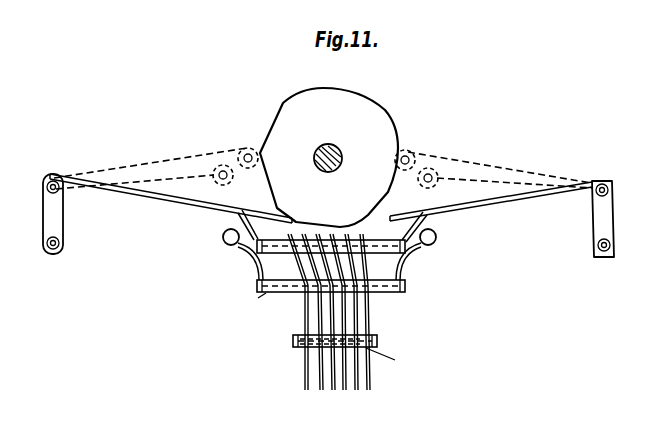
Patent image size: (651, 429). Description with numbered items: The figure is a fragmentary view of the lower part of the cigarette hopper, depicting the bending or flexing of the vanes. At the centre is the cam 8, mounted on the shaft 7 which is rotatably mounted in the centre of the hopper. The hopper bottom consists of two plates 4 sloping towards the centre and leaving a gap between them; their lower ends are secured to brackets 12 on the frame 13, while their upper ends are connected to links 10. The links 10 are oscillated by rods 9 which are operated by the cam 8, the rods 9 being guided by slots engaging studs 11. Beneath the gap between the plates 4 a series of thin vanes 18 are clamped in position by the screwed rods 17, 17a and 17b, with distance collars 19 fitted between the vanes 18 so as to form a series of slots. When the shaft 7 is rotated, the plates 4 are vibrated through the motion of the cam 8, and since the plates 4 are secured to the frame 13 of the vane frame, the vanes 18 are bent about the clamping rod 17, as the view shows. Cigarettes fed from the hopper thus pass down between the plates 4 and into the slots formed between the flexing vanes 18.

The bottom plates 4 is at (143, 192).
The shaft 7 is at (340, 148).
The cam 8 is at (382, 128).
The rods 9 is at (148, 167).
The links 10 is at (46, 222).
The studs 11 is at (212, 190).
The brackets 12 is at (223, 222).
The frame 13 is at (260, 262).
The screwed rod 17 is at (290, 293).
The screwed rod 17a is at (249, 309).
The screwed rod 17b is at (395, 359).
The vanes 18 is at (317, 350).
The distance collars 19 is at (353, 247).